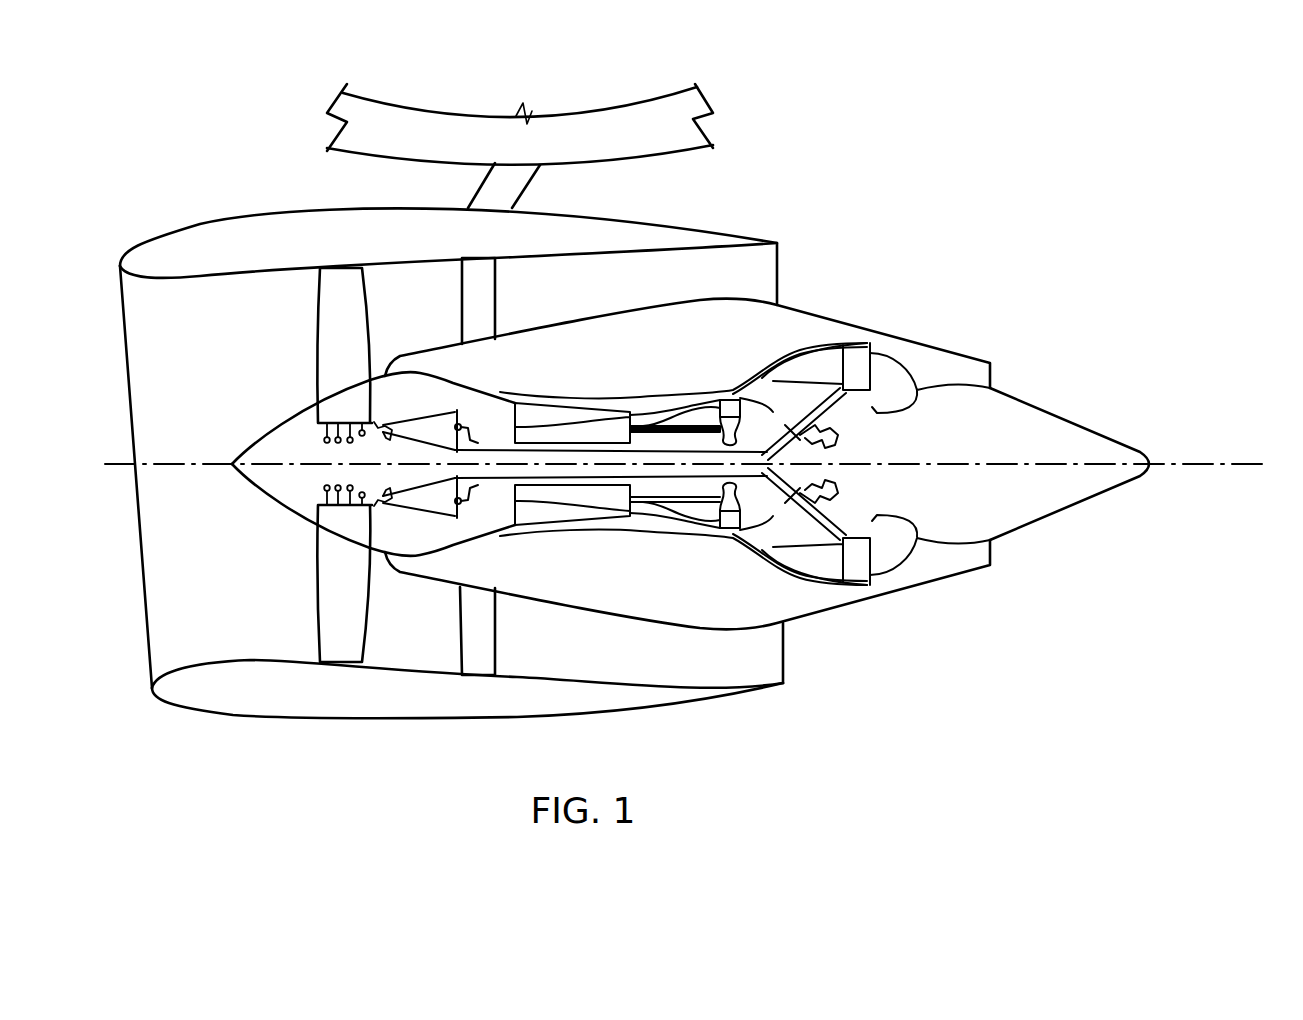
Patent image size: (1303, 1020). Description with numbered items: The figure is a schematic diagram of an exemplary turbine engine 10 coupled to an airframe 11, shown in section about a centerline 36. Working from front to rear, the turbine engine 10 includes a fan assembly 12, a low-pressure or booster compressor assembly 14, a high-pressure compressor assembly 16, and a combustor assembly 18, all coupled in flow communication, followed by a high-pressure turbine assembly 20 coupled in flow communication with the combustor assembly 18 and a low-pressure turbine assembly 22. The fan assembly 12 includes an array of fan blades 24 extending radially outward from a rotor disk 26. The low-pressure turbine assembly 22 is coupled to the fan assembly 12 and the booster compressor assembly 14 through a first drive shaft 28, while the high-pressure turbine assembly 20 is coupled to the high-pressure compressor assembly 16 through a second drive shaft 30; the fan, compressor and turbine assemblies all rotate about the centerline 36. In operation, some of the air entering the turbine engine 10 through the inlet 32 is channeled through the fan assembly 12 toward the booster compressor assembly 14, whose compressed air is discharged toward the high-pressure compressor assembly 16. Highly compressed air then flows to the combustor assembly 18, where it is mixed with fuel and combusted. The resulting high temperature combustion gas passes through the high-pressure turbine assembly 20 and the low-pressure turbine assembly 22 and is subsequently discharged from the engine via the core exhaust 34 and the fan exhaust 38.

The turbine engine 10 is at (922, 193).
The airframe 11 is at (572, 108).
The fan assembly 12 is at (298, 300).
The booster compressor assembly 14 is at (383, 368).
The high-pressure compressor assembly 16 is at (548, 400).
The combustor assembly 18 is at (680, 397).
The high-pressure turbine assembly 20 is at (733, 392).
The low-pressure turbine assembly 22 is at (811, 336).
The fan blades 24 is at (357, 339).
The rotor disk 26 is at (281, 452).
The first drive shaft 28 is at (487, 452).
The second drive shaft 30 is at (765, 460).
The inlet 32 is at (103, 308).
The core exhaust 34 is at (1010, 376).
The centerline 36 is at (1200, 461).
The fan exhaust 38 is at (803, 649).